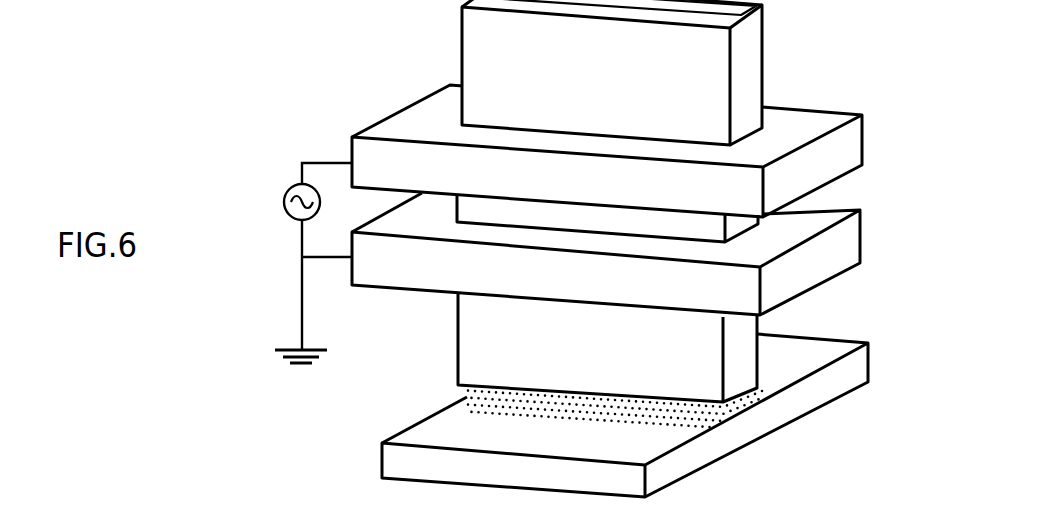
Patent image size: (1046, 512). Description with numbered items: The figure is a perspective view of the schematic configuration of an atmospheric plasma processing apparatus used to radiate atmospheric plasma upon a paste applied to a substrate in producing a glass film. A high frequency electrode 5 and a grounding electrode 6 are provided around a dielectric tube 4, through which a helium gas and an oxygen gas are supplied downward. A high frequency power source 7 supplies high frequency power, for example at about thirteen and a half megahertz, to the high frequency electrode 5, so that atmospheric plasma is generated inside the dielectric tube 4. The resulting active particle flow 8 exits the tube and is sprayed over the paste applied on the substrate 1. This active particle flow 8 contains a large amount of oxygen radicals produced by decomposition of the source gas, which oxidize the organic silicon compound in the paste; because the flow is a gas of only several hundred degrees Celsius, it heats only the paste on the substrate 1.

The substrate 1 is at (852, 374).
The dielectric tube 4 is at (483, 49).
The high frequency electrode 5 is at (803, 125).
The grounding electrode 6 is at (843, 246).
The high frequency power source 7 is at (285, 190).
The active particle flow 8 is at (477, 393).